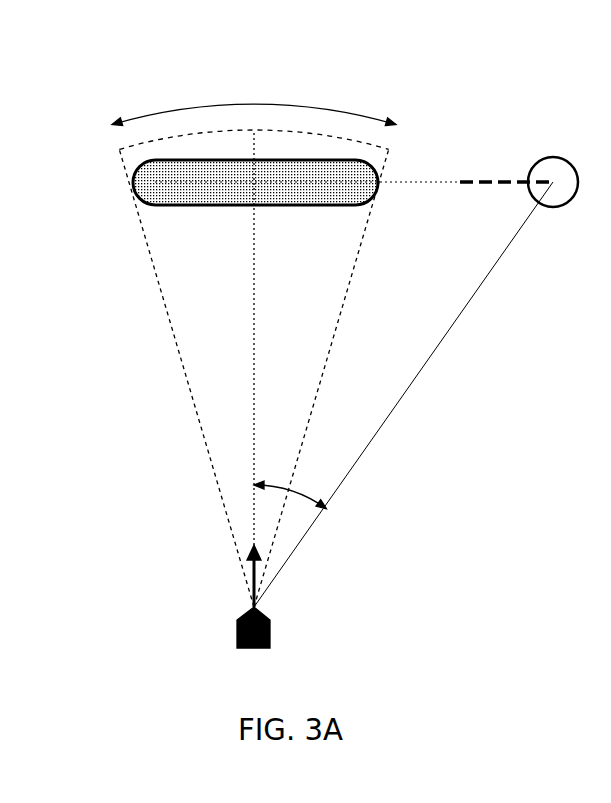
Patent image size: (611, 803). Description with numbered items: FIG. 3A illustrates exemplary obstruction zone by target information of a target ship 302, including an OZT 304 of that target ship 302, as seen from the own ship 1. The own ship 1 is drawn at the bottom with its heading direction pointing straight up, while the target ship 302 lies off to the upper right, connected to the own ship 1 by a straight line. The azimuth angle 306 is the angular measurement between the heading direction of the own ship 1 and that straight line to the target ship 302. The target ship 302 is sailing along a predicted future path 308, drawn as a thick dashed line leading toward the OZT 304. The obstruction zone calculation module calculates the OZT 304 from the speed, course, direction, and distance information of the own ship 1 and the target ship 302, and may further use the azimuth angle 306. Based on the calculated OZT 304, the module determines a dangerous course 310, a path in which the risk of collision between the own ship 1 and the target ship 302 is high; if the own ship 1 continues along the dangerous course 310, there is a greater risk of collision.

The own ship 1 is at (272, 622).
The target ship 302 is at (555, 207).
The OZT 304 is at (137, 183).
The azimuth angle 306 is at (303, 489).
The predicted future path 308 is at (493, 182).
The dangerous course 310 is at (158, 287).